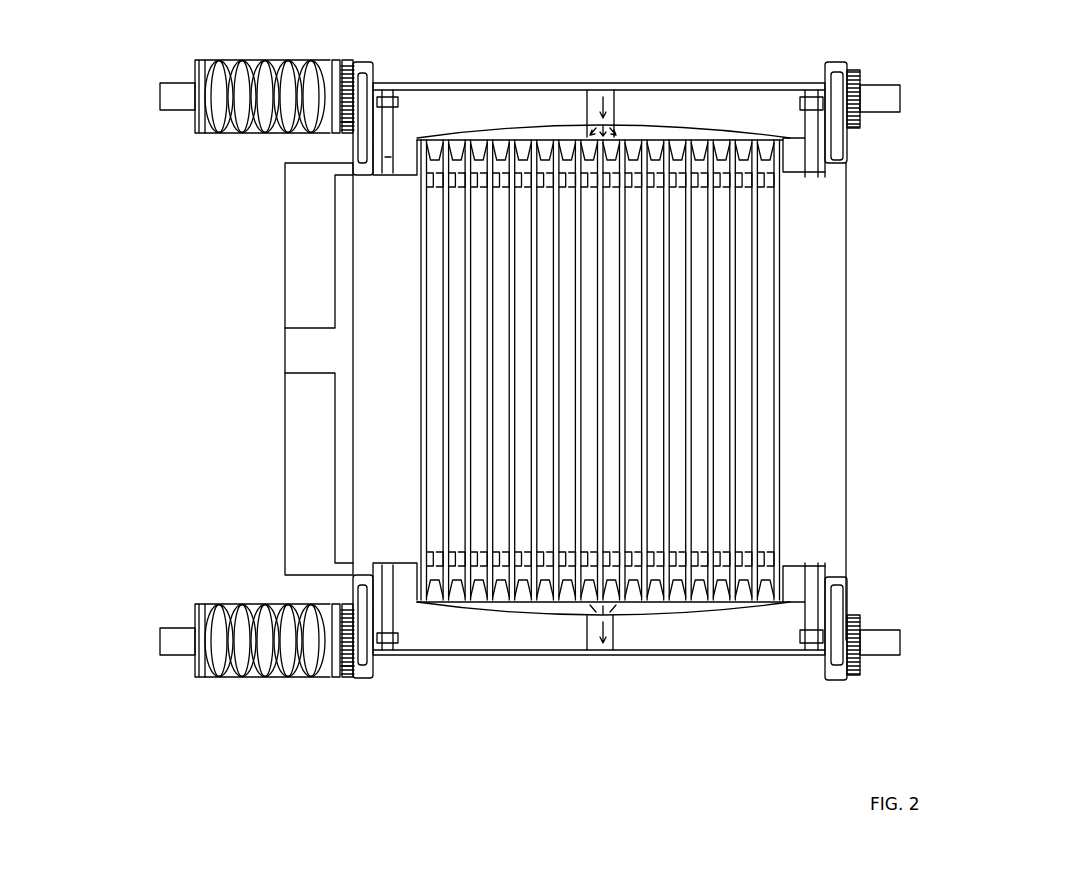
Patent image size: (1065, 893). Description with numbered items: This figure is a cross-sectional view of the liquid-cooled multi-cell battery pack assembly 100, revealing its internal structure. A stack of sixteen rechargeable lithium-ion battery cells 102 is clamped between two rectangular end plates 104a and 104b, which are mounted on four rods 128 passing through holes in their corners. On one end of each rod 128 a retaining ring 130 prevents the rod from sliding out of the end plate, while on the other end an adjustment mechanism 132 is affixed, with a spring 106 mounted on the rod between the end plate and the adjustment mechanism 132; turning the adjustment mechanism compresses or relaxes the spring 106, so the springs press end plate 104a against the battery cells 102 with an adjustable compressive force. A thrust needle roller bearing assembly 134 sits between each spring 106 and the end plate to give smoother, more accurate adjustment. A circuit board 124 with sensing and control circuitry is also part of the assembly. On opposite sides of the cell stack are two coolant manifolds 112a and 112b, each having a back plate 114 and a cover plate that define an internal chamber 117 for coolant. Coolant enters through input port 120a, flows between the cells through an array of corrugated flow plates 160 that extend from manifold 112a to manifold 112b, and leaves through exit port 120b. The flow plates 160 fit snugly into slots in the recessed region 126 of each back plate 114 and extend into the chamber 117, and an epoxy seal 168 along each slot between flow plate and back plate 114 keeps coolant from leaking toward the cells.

The battery pack assembly 100 is at (970, 230).
The battery cells 102 is at (480, 246).
The end plate 104a is at (365, 489).
The end plate 104b is at (834, 379).
The spring 106 is at (245, 133).
The manifold 112a is at (705, 100).
The manifold 112b is at (710, 640).
The back plate 114 is at (795, 165).
The internal chamber 117 is at (540, 140).
The input port 120a is at (603, 97).
The exit port 120b is at (600, 648).
The circuit board 124 is at (296, 261).
The recessed region 126 is at (418, 138).
The rod 128 is at (884, 640).
The retaining ring 130 is at (200, 62).
The adjustment mechanism 132 is at (198, 675).
The thrust needle roller bearing assembly 134 is at (357, 70).
The corrugated flow plates 160 is at (470, 441).
The epoxy seal 168 is at (508, 138).